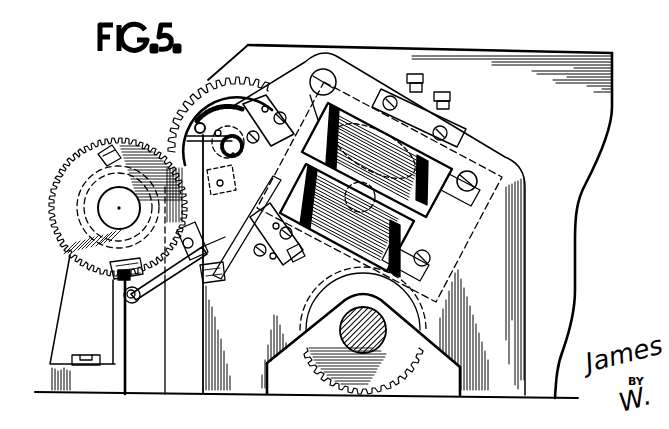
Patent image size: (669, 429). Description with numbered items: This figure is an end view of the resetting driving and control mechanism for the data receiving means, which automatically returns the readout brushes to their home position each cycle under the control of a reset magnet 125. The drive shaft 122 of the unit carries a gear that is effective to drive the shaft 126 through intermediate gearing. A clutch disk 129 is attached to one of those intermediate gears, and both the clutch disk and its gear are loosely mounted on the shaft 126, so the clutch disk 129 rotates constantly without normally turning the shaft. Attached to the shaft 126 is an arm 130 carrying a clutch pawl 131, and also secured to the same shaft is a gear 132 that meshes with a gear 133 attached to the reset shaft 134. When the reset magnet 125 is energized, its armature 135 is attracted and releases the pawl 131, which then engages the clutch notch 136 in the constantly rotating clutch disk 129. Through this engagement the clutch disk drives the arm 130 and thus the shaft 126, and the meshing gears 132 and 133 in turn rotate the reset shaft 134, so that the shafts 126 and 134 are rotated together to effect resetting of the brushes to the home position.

The shaft 122 is at (387, 332).
The reset magnet 125 is at (403, 173).
The shaft 126 is at (113, 207).
The clutch disk 129 is at (82, 172).
The arm 130 is at (177, 266).
The clutch pawl 131 is at (149, 282).
The gear 132 is at (118, 141).
The gear 133 is at (183, 107).
The reset shaft 134 is at (229, 202).
The armature 135 is at (320, 132).
The clutch notch 136 is at (118, 278).